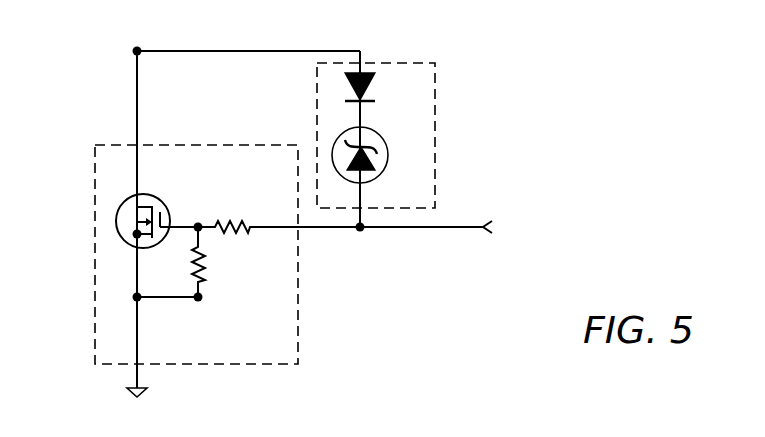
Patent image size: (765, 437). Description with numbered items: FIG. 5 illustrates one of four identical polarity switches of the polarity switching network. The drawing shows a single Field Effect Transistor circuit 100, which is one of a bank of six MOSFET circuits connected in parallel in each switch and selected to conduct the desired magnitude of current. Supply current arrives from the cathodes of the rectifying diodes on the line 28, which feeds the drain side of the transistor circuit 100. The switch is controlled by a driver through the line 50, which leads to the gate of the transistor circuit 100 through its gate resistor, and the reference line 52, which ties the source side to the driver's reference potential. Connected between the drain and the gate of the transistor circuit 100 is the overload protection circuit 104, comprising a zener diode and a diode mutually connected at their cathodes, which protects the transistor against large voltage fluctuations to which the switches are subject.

The line 28 is at (137, 51).
The line 50 is at (412, 228).
The reference line 52 is at (133, 408).
The Field Effect Transistor circuit 100 is at (95, 213).
The overload protection circuit 104 is at (435, 130).